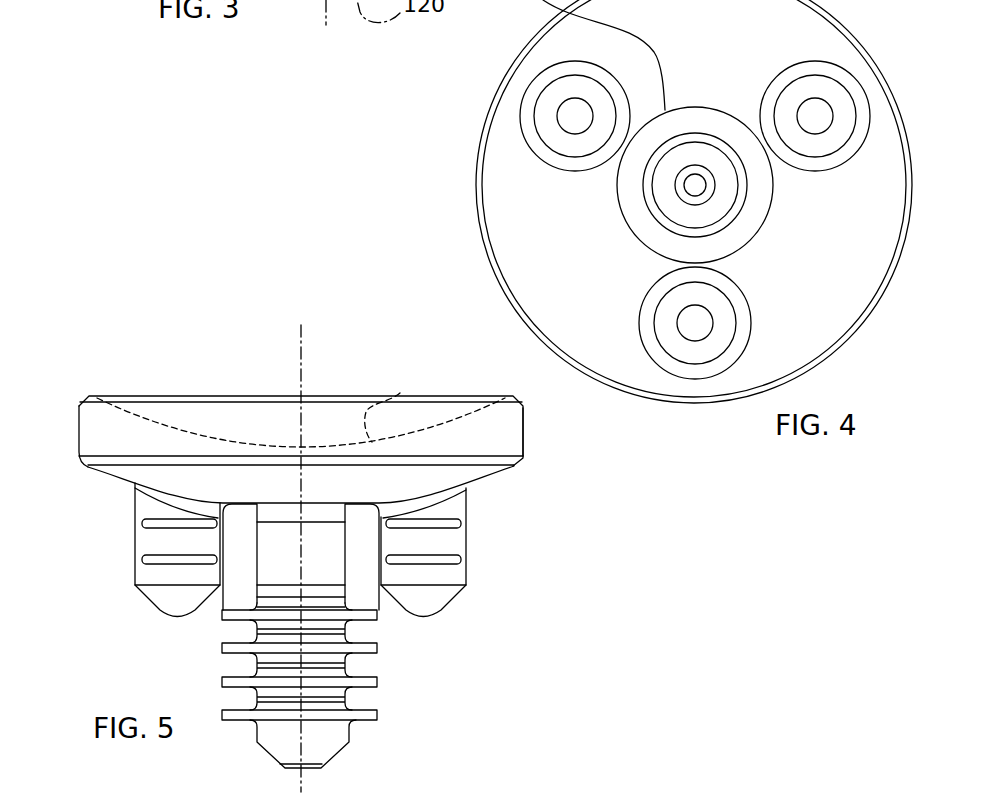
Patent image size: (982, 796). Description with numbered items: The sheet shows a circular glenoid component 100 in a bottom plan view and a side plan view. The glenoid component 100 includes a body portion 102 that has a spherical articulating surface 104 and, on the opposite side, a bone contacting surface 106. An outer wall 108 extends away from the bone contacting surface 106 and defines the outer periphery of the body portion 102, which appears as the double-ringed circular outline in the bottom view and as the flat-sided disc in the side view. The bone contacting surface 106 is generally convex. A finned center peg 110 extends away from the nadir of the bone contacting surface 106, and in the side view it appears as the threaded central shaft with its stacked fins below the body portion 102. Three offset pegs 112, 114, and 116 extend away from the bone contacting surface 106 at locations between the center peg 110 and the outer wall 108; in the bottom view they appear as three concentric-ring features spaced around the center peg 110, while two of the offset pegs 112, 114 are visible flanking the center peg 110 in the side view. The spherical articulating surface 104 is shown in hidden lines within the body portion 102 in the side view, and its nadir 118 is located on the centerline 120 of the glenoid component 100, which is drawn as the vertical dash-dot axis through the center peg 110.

In FIG. 5, the glenoid component 100 is at (75, 384).
In FIG. 5, the body portion 102 is at (523, 460).
In FIG. 5, the spherical articulating surface 104 is at (400, 393).
In FIG. 4, the bone contacting surface 106 is at (718, 43).
In FIG. 5, the bone contacting surface 106 is at (499, 474).
In FIG. 5, the outer wall 108 is at (523, 437).
In FIG. 4, the finned center peg 110 is at (658, 131).
In FIG. 5, the finned center peg 110 is at (377, 686).
In FIG. 4, the offset peg 112 is at (527, 92).
In FIG. 5, the offset peg 112 is at (160, 608).
In FIG. 4, the offset peg 114 is at (640, 330).
In FIG. 5, the offset peg 114 is at (450, 604).
In FIG. 4, the offset peg 116 is at (830, 62).
In FIG. 5, the nadir 118 is at (303, 448).
In FIG. 5, the centerline 120 is at (302, 338).